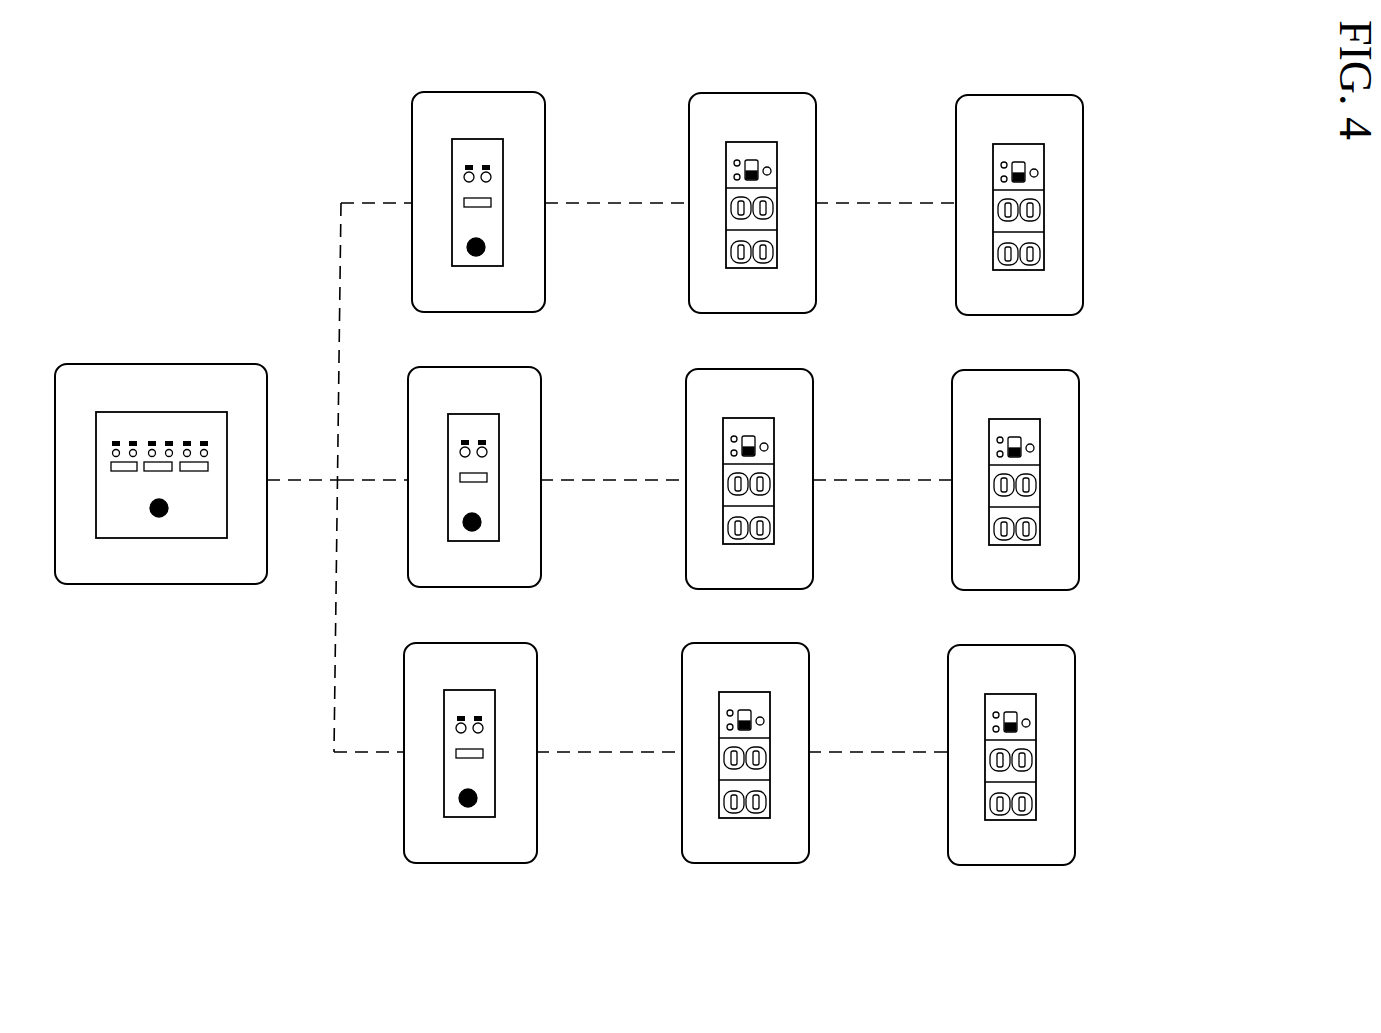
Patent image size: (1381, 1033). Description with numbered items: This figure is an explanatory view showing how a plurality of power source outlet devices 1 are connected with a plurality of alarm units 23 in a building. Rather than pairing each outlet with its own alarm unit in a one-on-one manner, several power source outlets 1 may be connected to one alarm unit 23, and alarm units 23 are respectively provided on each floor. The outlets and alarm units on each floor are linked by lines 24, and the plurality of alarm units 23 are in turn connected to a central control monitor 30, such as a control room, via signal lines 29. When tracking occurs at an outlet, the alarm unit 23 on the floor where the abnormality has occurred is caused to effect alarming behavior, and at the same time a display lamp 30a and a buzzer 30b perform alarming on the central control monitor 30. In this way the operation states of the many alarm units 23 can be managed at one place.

The power source outlet device 1 is at (815, 280).
The alarm unit 23 is at (545, 275).
The communication line 24 is at (617, 205).
The signal line 29 is at (300, 477).
The central control monitor 30 is at (154, 362).
The display lamp 30a is at (152, 450).
The buzzer 30b is at (159, 521).